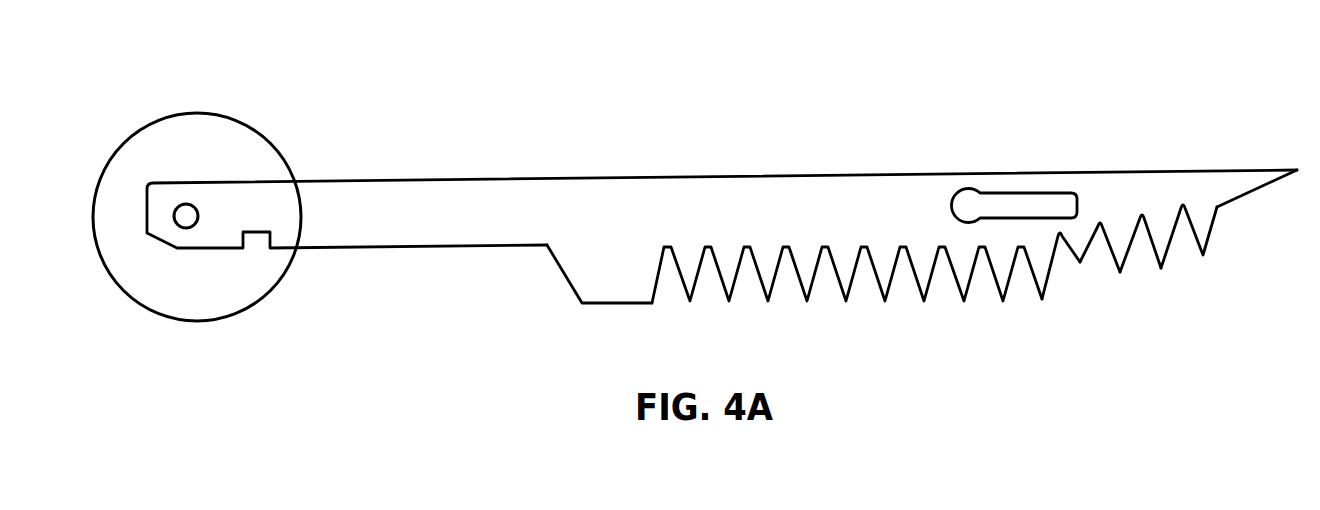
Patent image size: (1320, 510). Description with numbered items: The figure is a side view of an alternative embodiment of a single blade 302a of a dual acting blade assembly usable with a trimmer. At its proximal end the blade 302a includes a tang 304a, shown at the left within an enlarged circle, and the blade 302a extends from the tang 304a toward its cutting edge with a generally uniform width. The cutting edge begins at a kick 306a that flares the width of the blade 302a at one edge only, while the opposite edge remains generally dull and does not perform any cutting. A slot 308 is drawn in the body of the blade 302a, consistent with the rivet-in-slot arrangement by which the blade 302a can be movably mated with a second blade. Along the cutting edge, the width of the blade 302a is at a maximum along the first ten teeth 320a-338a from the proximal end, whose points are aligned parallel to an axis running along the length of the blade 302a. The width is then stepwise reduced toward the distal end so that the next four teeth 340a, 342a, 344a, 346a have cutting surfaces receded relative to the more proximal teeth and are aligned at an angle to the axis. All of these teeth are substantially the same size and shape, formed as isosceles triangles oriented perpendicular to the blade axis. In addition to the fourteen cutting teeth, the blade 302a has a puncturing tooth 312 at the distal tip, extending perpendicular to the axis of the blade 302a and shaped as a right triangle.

The blade 302a is at (752, 126).
The tang 304a is at (253, 125).
The kick 306a is at (588, 270).
The slot 308 is at (1017, 203).
The puncturing tooth 312 is at (1245, 182).
The first ten teeth 320a-338a is at (1040, 302).
The tooth 340a is at (1080, 262).
The tooth 342a is at (1122, 252).
The tooth 344a is at (1162, 237).
The tooth 346a is at (1205, 233).